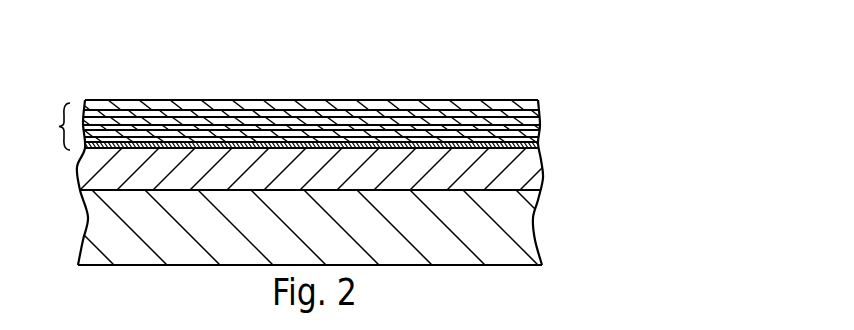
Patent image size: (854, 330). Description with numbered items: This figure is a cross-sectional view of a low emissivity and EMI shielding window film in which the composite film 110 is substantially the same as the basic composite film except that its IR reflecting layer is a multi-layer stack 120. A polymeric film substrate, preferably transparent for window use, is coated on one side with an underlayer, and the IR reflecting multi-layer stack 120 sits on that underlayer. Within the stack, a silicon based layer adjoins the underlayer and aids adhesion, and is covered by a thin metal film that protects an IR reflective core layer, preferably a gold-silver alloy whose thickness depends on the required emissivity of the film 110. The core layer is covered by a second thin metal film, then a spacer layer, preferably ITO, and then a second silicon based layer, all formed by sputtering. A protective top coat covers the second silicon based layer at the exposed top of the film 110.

The composite film 110 is at (662, 80).
The IR reflecting multi-layer stack 120 is at (44, 126).